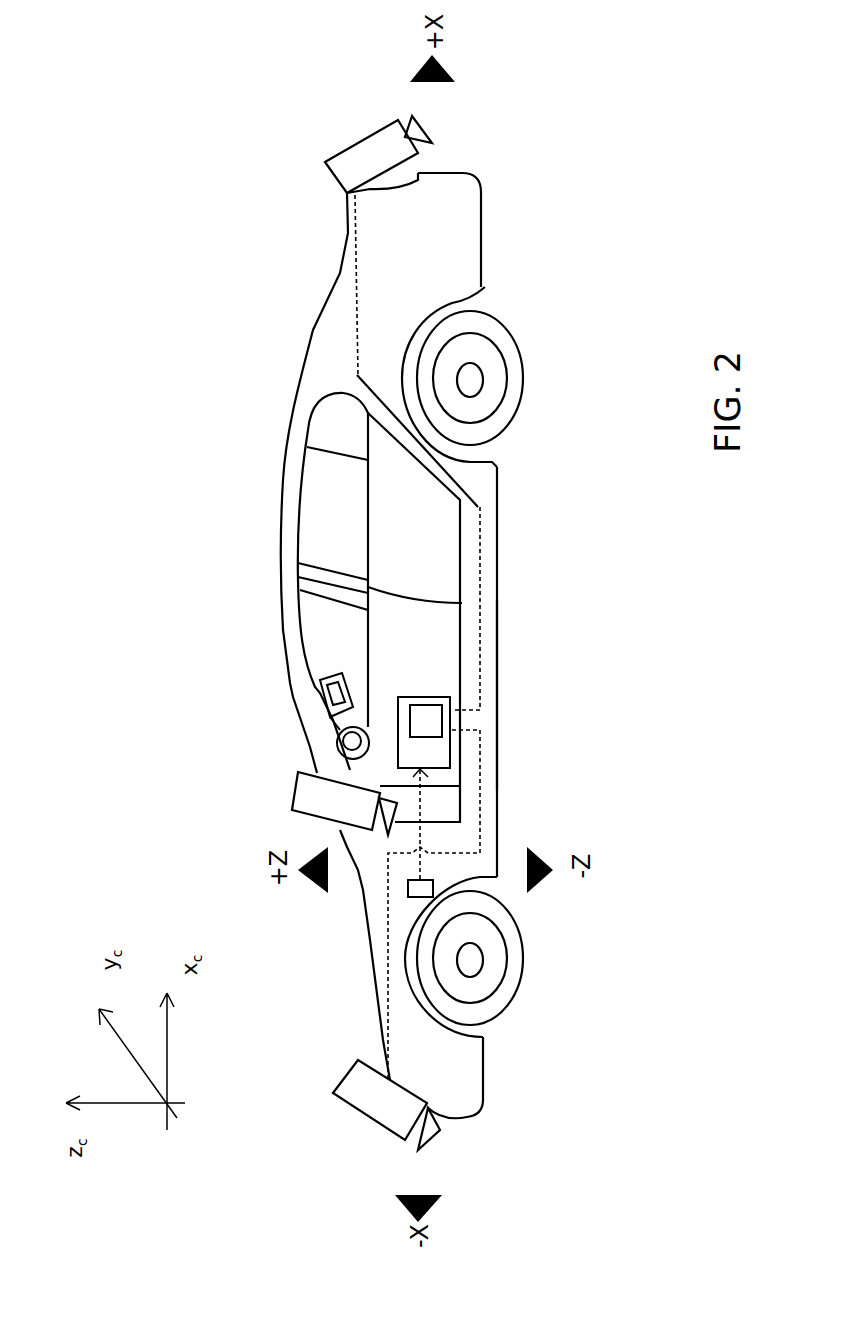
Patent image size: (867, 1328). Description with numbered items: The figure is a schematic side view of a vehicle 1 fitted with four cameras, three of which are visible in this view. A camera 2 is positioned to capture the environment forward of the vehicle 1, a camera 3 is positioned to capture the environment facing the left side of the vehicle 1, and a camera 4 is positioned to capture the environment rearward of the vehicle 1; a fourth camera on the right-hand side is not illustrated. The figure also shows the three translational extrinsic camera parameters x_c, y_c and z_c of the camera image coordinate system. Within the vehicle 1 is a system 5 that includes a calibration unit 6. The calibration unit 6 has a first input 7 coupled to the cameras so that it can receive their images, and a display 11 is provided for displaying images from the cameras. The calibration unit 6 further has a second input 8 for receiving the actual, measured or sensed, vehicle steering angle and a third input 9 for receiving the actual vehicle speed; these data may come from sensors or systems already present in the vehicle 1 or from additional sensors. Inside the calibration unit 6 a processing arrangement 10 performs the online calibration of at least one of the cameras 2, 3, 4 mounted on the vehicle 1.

The vehicle 1 is at (300, 290).
The camera 2 is at (332, 1076).
The camera 3 is at (270, 780).
The camera 4 is at (360, 133).
The system 5 is at (522, 661).
The calibration unit 6 is at (390, 751).
The first input 7 is at (512, 746).
The second input 8 is at (385, 718).
The third input 9 is at (428, 800).
The processing arrangement 10 is at (427, 708).
The display 11 is at (293, 688).